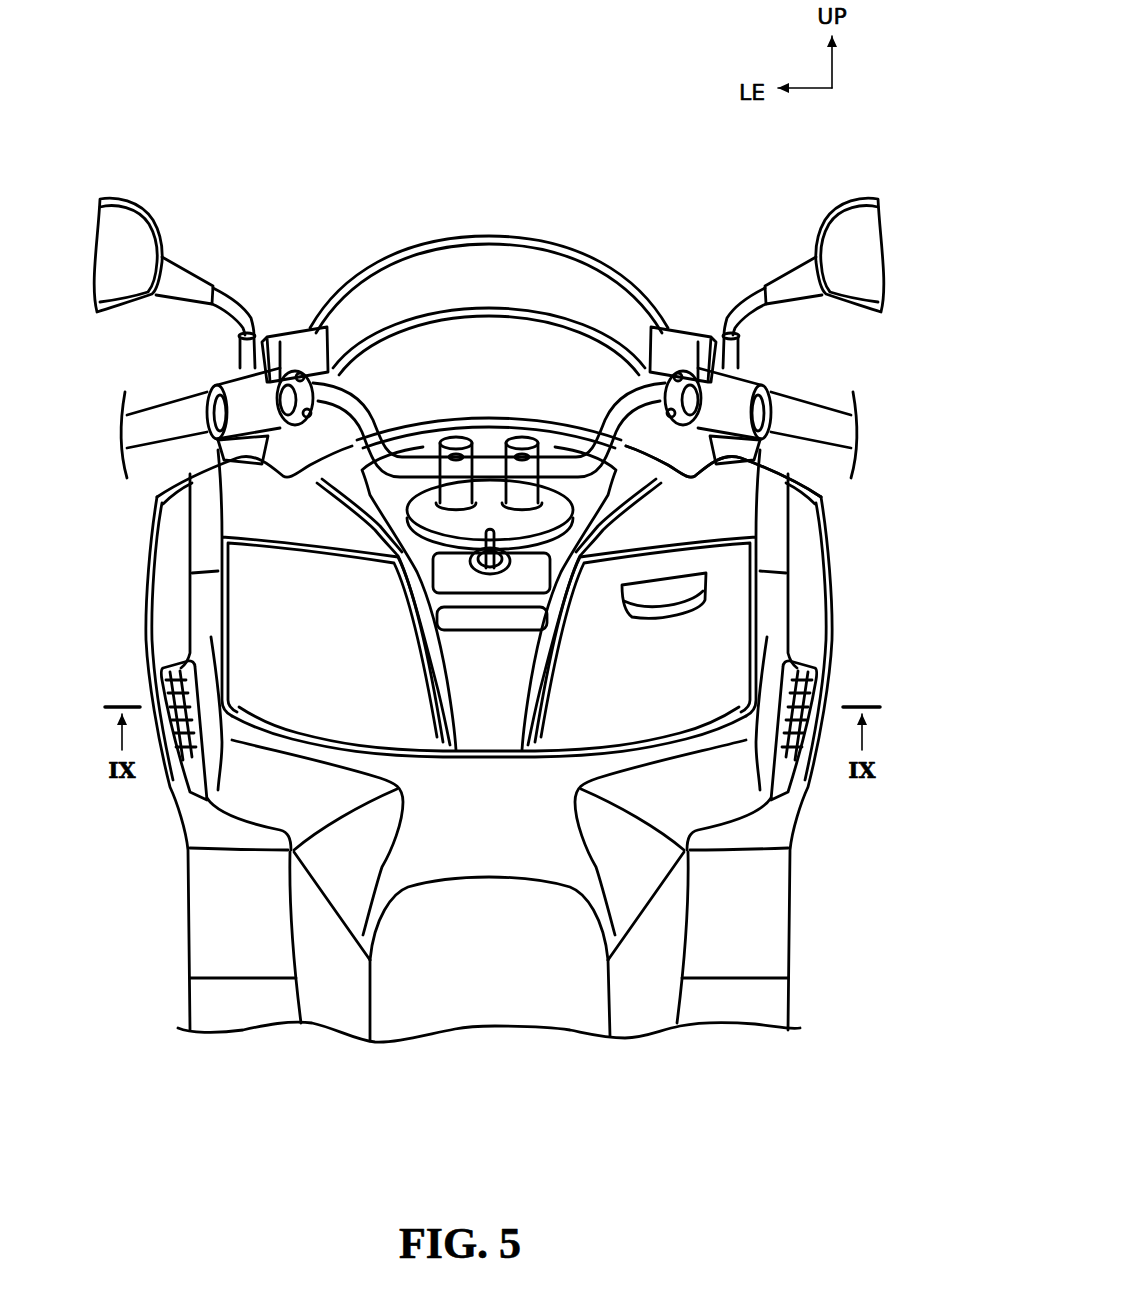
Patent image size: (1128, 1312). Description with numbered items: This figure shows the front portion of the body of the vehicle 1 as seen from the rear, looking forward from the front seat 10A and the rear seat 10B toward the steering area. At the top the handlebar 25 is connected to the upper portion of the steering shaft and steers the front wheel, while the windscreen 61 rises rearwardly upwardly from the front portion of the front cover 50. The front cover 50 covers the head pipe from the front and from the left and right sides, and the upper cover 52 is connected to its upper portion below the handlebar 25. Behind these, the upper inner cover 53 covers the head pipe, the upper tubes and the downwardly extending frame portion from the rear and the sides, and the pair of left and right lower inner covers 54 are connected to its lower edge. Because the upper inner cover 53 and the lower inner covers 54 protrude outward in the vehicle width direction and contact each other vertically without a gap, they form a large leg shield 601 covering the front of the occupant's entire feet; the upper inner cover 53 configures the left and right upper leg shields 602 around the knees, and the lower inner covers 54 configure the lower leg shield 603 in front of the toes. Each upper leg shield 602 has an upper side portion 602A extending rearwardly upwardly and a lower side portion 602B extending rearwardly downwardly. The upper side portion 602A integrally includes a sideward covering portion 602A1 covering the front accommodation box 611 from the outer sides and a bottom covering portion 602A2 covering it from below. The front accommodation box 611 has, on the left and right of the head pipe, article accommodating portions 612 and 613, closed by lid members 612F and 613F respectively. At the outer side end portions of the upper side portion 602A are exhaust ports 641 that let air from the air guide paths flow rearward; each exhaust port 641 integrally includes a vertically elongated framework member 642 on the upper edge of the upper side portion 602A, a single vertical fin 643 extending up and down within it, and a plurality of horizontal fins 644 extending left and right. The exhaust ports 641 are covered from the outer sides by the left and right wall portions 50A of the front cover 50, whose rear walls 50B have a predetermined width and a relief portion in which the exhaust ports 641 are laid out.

The motorcycle 1 is at (481, 72).
The windscreen 61 is at (482, 234).
The handlebar 25 is at (625, 390).
The upper cover 52 is at (358, 390).
The article accommodating portion 613 is at (273, 524).
The article accommodating portion 612 is at (717, 534).
The lid member 613F is at (360, 600).
The lid member 612F is at (594, 597).
The front cover 50 is at (834, 511).
The wall portion 50A is at (153, 527).
The rear wall 50B is at (167, 579).
The front accommodation box 611 is at (764, 539).
The sideward covering portion 602A1 is at (207, 597).
The upper inner cover 53 is at (794, 642).
The exhaust port 641 is at (306, 612).
The framework member 642 is at (190, 666).
The vertical fin 643 is at (193, 696).
The horizontal fin 644 is at (193, 716).
The upper leg shield 602 is at (807, 821).
The upper side portion 602A is at (193, 837).
The bottom covering portion 602A2 is at (263, 805).
The lower side portion 602B is at (207, 922).
The lower leg shield 603 is at (186, 1005).
The leg shield 601 is at (805, 1014).
The lower inner cover 54 is at (336, 997).
The front seat 10A is at (518, 987).
The rear seat 10B is at (609, 998).